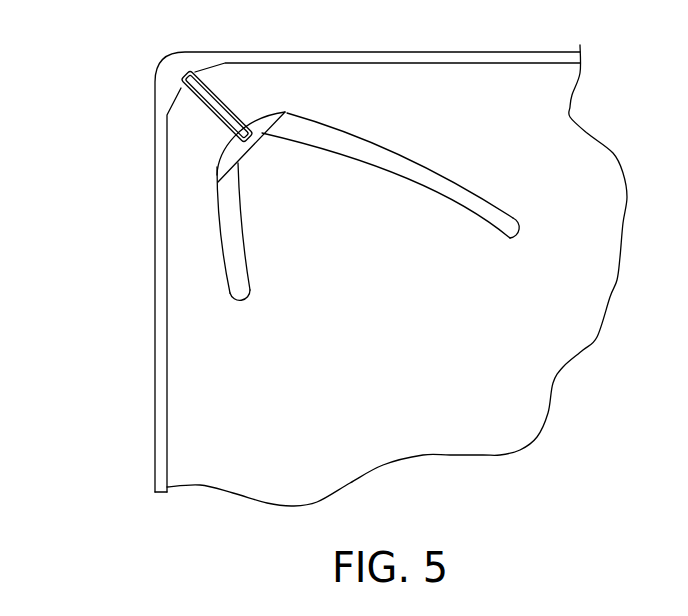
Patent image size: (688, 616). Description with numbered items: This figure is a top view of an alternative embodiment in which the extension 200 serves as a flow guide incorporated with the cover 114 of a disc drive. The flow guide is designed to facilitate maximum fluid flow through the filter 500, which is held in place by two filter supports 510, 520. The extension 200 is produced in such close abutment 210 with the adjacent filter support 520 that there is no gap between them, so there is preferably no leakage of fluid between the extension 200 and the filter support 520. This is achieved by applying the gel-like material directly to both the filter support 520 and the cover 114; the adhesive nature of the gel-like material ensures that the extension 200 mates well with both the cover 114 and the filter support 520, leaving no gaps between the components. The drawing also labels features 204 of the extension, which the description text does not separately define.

The cover 114 is at (349, 398).
The extension 200 is at (251, 272).
The retention arm 204 is at (323, 211).
The abutment 210 is at (218, 187).
The filter 500 is at (323, 163).
The filter support 510 is at (198, 72).
The filter support 520 is at (285, 110).